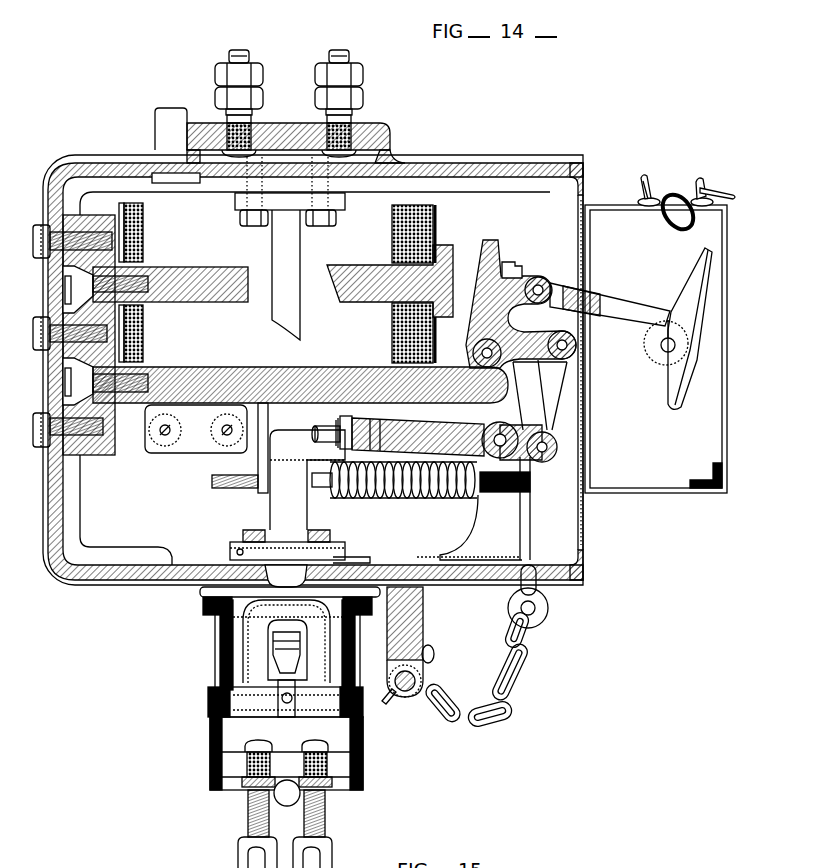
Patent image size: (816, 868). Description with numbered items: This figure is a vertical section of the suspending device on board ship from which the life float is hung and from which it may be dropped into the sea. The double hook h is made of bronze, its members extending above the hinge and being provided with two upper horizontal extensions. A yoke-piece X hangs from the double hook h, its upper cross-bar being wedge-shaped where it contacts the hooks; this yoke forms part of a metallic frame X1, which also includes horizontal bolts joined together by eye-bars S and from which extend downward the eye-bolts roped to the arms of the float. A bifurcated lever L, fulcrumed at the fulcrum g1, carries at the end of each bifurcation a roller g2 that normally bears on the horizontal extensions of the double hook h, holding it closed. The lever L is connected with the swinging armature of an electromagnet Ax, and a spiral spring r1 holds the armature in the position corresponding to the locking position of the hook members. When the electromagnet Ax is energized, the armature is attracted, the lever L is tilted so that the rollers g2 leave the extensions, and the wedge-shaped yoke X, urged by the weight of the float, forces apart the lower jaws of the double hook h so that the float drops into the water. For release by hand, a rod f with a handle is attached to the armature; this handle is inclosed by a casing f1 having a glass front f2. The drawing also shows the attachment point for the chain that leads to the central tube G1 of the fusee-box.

The eye-bars S is at (313, 346).
The electromagnet Ax is at (368, 263).
The rocker lever b is at (480, 294).
The rod f is at (593, 301).
The glass front f2 is at (699, 328).
The casing f1 is at (660, 334).
The fulcrum of lever g1 is at (488, 434).
The roller g2 is at (355, 427).
The bifurcated lever L is at (431, 432).
The double hook h is at (291, 483).
The spiral spring r1 is at (413, 492).
The yoke-piece X is at (287, 650).
The metallic frame X1 is at (286, 753).
The central tube G1 is at (403, 698).